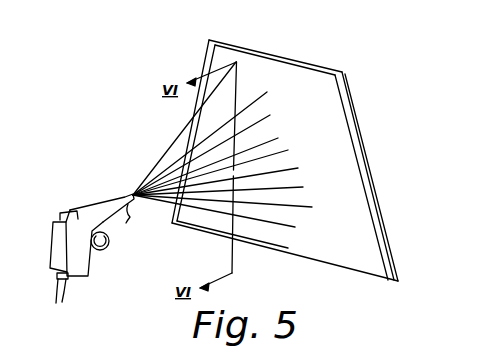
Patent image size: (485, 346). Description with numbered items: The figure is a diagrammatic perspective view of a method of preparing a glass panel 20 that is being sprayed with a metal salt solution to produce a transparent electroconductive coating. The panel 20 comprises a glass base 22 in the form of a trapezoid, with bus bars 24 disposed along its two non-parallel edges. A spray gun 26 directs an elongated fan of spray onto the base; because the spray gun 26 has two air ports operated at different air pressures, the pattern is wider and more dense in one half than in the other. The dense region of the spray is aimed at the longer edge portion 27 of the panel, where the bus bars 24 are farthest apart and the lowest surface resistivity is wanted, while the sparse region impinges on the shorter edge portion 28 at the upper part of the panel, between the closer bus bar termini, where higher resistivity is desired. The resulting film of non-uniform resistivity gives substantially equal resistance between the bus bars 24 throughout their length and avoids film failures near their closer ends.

The panel 20 is at (281, 172).
The glass base 22 is at (372, 183).
The bus bars 24 is at (192, 130).
The spray gun 26 is at (98, 205).
The longer edge portion 27 is at (309, 258).
The shorter edge portion 28 is at (285, 63).